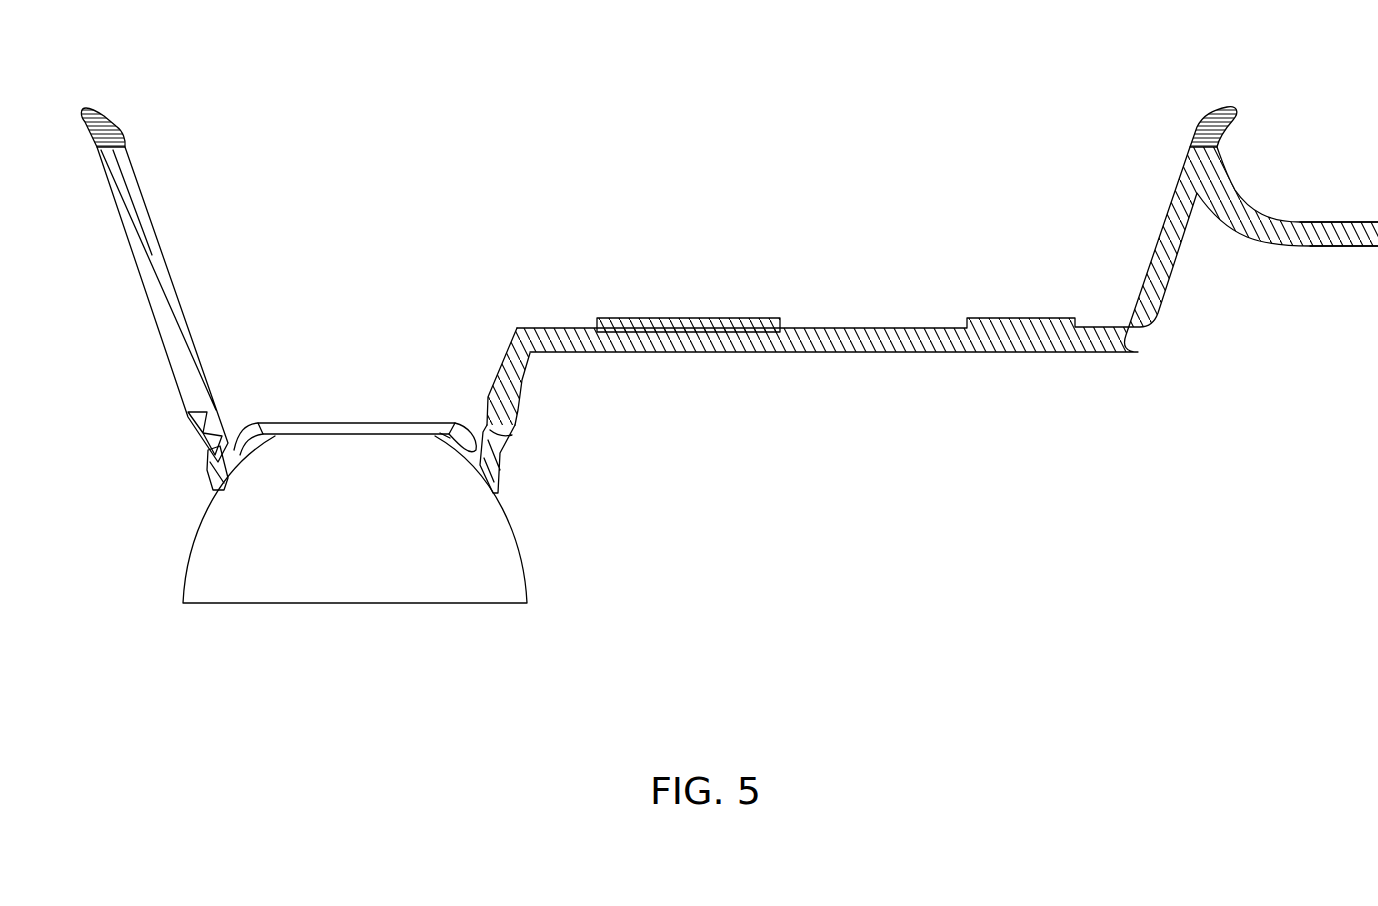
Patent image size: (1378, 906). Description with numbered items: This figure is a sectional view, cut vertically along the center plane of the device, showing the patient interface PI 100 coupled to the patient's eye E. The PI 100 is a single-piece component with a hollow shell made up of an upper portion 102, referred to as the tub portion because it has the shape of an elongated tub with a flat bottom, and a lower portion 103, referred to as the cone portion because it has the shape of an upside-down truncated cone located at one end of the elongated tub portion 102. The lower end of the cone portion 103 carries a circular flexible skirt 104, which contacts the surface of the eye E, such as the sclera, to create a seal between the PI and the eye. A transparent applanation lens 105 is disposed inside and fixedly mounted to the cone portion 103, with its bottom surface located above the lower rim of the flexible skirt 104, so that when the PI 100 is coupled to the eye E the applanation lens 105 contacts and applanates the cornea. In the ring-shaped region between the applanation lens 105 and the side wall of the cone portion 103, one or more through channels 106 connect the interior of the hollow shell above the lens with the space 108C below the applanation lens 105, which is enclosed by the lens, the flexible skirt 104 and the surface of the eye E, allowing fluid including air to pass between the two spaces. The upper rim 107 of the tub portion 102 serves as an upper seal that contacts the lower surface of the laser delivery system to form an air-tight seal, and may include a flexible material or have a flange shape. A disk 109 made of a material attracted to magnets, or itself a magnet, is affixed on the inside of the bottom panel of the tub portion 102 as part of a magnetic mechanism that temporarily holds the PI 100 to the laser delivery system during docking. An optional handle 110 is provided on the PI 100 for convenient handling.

The patient interface (PI) 100 is at (720, 239).
The upper portion (tub portion) 102 is at (928, 340).
The lower portion (cone portion) 103 is at (523, 378).
The flexible skirt 104 is at (212, 480).
The applanation lens 105 is at (490, 431).
The through channel 106 is at (200, 420).
The upper rim (upper seal) 107 is at (86, 117).
The space below the applanation lens 108C is at (218, 453).
The disk 109 is at (708, 326).
The handle 110 is at (1279, 238).
The eye E is at (511, 568).